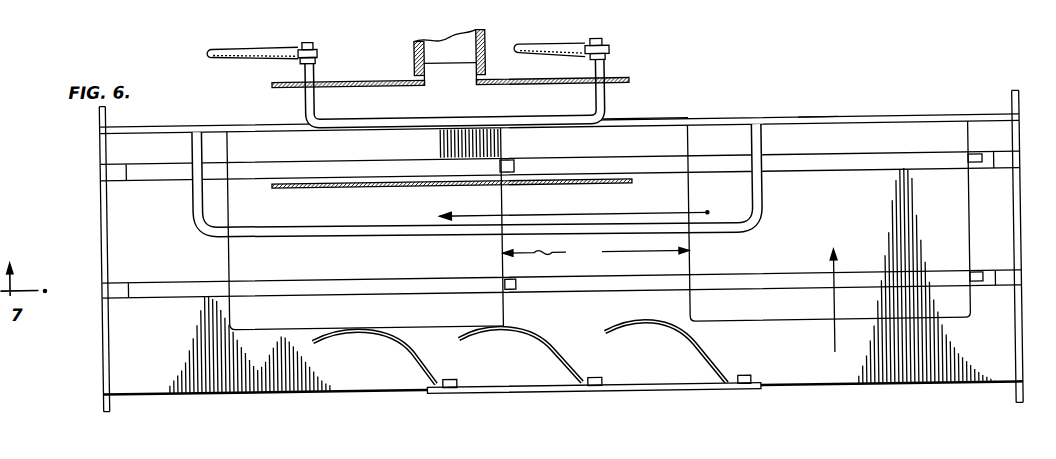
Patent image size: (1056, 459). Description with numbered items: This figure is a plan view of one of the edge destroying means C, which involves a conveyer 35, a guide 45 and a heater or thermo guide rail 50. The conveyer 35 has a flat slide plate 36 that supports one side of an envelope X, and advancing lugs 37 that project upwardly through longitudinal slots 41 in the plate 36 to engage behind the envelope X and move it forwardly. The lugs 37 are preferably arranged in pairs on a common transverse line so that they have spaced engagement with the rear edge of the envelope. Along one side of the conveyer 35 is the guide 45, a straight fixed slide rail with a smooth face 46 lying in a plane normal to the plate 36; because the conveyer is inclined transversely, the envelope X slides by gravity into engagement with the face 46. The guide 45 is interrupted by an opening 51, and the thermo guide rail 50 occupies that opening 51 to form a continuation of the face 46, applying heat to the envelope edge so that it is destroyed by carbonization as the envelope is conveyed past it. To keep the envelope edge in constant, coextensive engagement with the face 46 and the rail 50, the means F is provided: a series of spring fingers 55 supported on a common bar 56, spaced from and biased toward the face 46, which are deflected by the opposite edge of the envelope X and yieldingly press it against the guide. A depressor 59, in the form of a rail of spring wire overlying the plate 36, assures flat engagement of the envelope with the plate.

The conveyer 35 is at (417, 360).
The slide plate 36 is at (177, 259).
The advancing lug 37 is at (514, 164).
The longitudinal slots 41 is at (266, 170).
The guide 45 is at (853, 132).
The face 46 is at (653, 130).
The thermo guide rail 50 is at (489, 113).
The opening 51 is at (315, 119).
The fingers 55 is at (397, 360).
The bar 56 is at (537, 394).
The depressor 59 is at (765, 208).
The edge destroying means C is at (821, 118).
The guiding means F is at (396, 368).
The envelope X is at (596, 252).